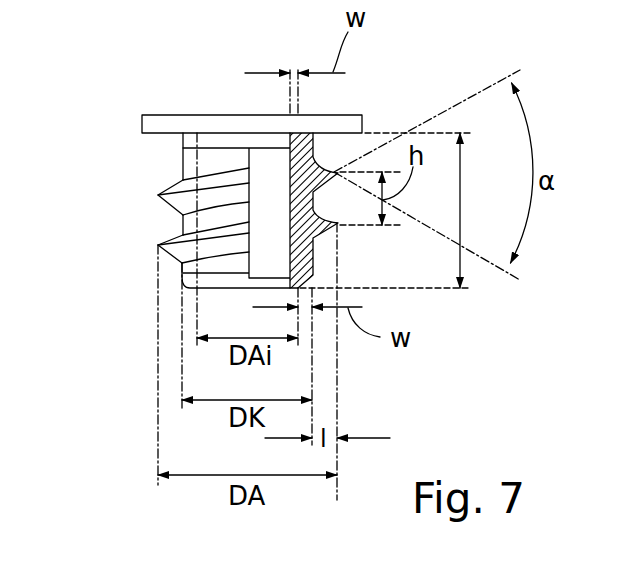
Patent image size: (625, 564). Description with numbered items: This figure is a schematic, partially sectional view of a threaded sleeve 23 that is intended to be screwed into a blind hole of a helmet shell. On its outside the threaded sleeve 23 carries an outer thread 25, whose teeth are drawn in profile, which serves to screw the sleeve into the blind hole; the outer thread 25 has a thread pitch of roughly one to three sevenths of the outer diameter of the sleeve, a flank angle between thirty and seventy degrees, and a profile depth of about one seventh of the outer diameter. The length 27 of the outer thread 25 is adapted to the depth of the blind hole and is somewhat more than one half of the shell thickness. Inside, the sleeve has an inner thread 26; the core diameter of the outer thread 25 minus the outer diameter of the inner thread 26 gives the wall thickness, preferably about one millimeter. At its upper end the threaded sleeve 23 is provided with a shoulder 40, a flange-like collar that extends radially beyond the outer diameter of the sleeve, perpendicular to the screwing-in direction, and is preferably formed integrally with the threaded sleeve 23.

The threaded sleeve 23 is at (148, 225).
The outer thread 25 is at (170, 188).
The inner thread 26 is at (313, 145).
The length 27 is at (462, 200).
The shoulder 40 is at (163, 123).